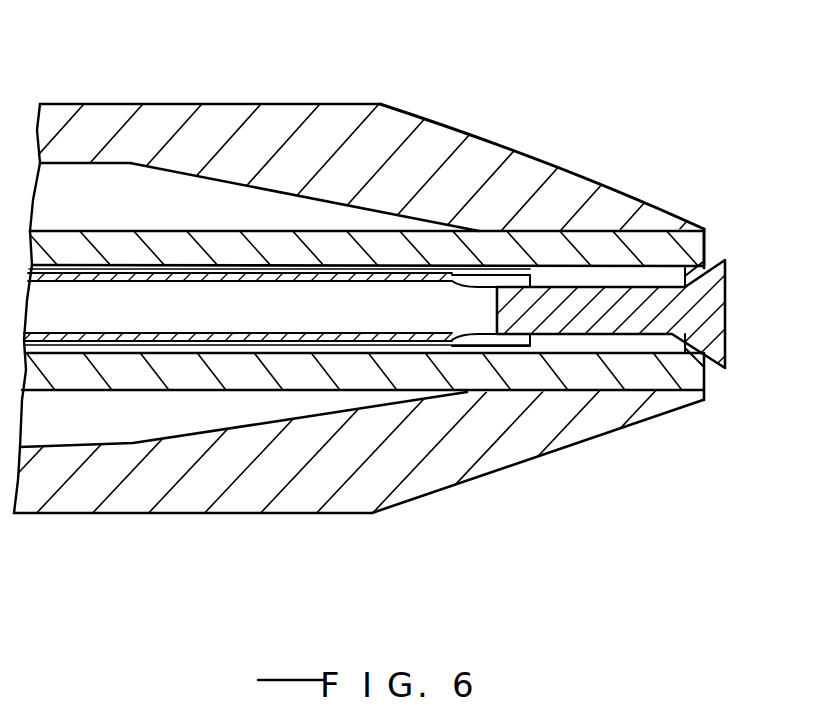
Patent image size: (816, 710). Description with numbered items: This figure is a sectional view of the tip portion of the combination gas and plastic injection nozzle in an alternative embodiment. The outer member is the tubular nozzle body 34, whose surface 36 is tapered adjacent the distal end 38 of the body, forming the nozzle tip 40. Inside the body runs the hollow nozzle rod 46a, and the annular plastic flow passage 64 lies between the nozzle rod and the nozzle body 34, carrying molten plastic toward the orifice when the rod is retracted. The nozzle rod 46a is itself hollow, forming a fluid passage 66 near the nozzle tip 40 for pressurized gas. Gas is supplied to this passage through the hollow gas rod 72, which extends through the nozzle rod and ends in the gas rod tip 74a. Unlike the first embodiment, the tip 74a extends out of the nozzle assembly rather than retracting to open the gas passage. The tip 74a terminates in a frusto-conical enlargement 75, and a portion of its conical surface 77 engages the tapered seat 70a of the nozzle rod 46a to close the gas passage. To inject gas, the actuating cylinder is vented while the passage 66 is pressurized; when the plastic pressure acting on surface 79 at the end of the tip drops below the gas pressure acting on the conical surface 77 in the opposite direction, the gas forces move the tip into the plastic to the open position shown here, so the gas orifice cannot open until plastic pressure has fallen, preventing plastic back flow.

The tubular nozzle body 34 is at (283, 104).
The tapered surface of nozzle body 36 is at (496, 147).
The distal end of nozzle body 38 is at (708, 230).
The nozzle tip 40 is at (601, 147).
The nozzle rod 46a is at (155, 392).
The annular plastic flow passage 64 is at (294, 212).
The fluid passage 66 is at (563, 343).
The tapered seat 70a is at (706, 262).
The hollow gas rod 72 is at (168, 275).
The gas rod tip 74a is at (592, 336).
The frusto-conical enlargement 75 is at (718, 347).
The conical surface 77 is at (685, 342).
The end surface of tip 79 is at (729, 292).